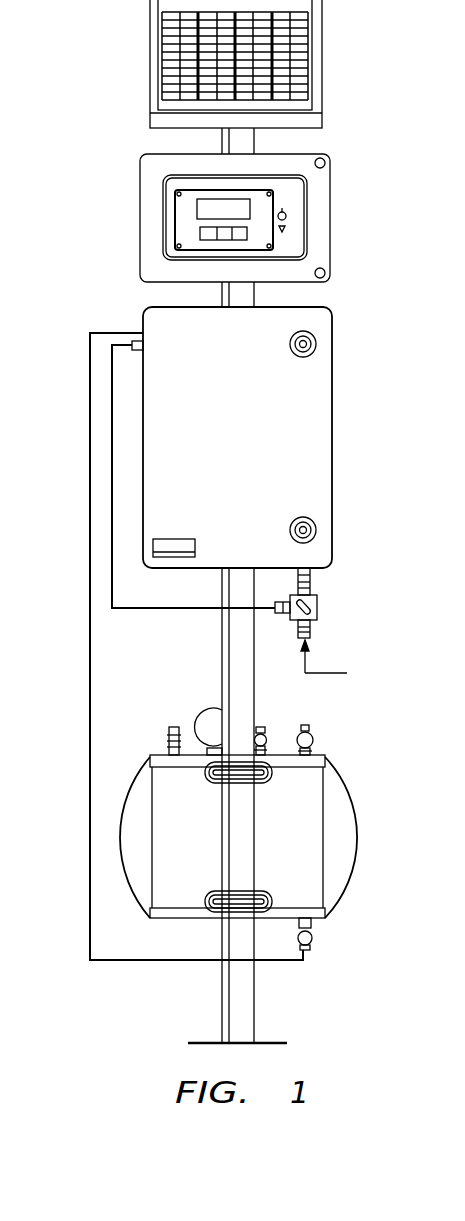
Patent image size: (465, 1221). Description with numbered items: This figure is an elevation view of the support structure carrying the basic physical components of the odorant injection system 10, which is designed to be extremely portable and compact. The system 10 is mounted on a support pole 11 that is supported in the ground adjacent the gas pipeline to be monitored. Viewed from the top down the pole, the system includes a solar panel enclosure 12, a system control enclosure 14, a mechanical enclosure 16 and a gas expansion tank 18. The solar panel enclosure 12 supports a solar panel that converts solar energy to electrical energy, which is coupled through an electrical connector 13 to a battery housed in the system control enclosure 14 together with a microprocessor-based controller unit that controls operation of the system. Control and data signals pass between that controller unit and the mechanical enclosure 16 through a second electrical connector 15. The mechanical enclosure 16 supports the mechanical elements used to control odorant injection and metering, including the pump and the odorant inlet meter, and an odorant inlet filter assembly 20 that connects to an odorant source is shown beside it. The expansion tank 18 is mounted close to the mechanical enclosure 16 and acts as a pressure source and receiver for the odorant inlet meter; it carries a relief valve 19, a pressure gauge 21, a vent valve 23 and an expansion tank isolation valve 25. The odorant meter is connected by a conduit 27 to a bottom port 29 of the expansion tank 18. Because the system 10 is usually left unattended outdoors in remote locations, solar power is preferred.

The system 10 is at (74, 292).
The support pole 11 is at (222, 1005).
The solar panel enclosure 12 is at (150, 65).
The electrical connector 13 is at (303, 147).
The system control enclosure 14 is at (140, 218).
The electrical connector 15 is at (303, 298).
The mechanical enclosure 16 is at (225, 448).
The gas expansion tank 18 is at (357, 833).
The relief valve 19 is at (167, 735).
The odorant inlet filter assembly 20 is at (317, 605).
The pressure gauge 21 is at (200, 711).
The vent valve 23 is at (258, 728).
The expansion tank isolation valve 25 is at (313, 739).
The conduit 27 is at (90, 643).
The bottom port 29 is at (313, 938).